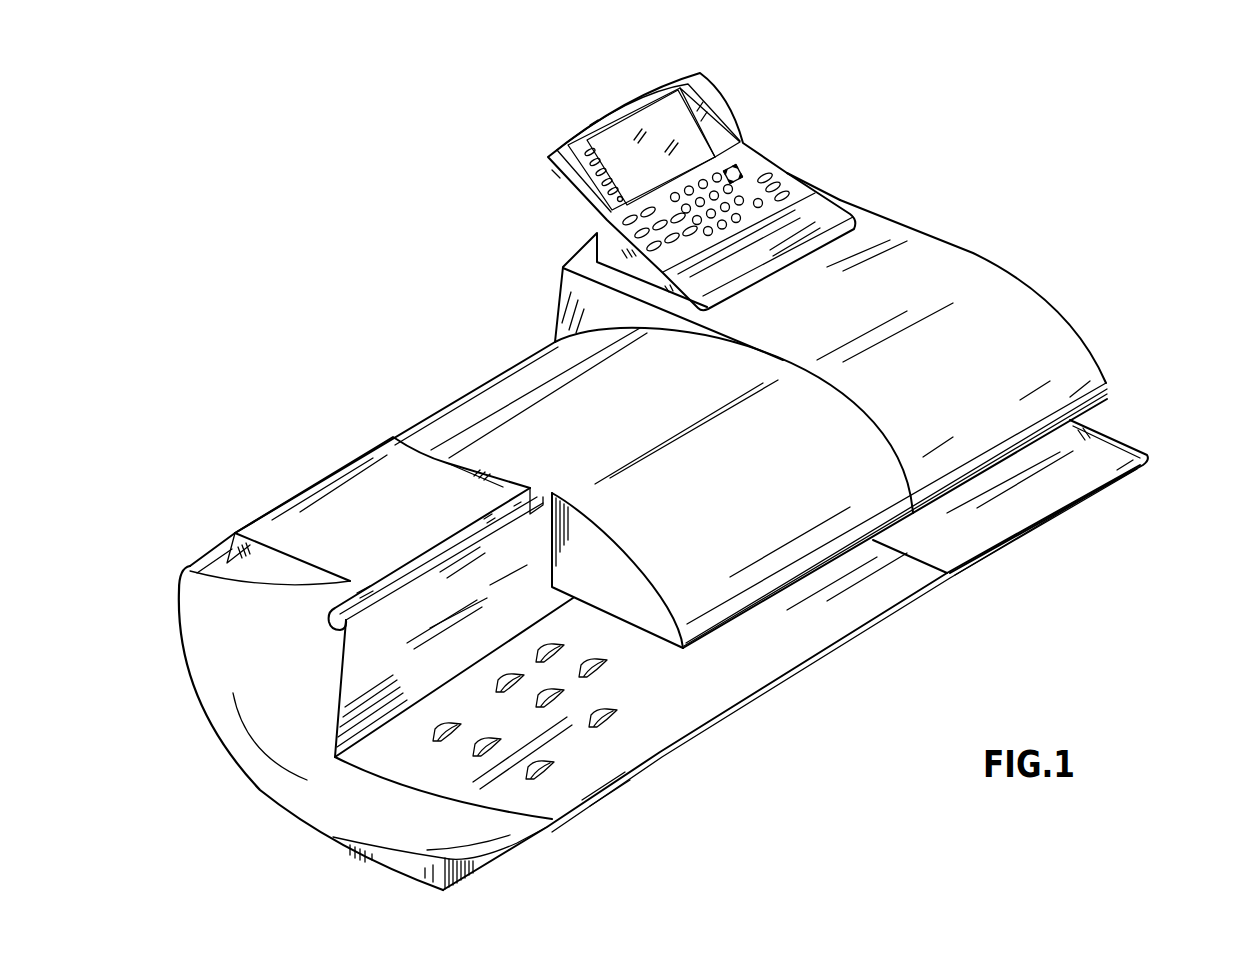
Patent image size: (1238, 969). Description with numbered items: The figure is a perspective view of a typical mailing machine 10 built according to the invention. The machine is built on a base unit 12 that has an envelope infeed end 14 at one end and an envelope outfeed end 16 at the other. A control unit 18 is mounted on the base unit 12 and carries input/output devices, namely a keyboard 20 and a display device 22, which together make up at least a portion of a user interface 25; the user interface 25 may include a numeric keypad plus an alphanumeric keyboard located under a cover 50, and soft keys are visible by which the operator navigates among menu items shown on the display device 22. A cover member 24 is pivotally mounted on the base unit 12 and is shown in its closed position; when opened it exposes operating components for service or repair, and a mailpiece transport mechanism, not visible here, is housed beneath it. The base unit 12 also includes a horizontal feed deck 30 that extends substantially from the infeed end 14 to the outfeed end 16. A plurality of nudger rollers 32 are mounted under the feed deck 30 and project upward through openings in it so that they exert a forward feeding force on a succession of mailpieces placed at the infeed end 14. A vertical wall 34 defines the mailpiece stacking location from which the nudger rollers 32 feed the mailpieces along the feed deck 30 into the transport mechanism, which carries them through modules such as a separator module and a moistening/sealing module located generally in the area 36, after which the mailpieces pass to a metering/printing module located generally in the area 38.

The mailing machine 10 is at (355, 312).
The base unit 12 is at (227, 722).
The envelope infeed end 14 is at (246, 816).
The envelope outfeed end 16 is at (1143, 400).
The control unit 18 is at (733, 120).
The keyboard 20 is at (627, 237).
The display device 22 is at (655, 118).
The cover member 24 is at (1007, 290).
The user interface 25 is at (740, 61).
The horizontal feed deck 30 is at (660, 743).
The nudger rollers 32 is at (503, 661).
The vertical wall 34 is at (465, 580).
The module area 36 is at (791, 694).
The metering/printing module area 38 is at (961, 582).
The cover 50 is at (833, 212).